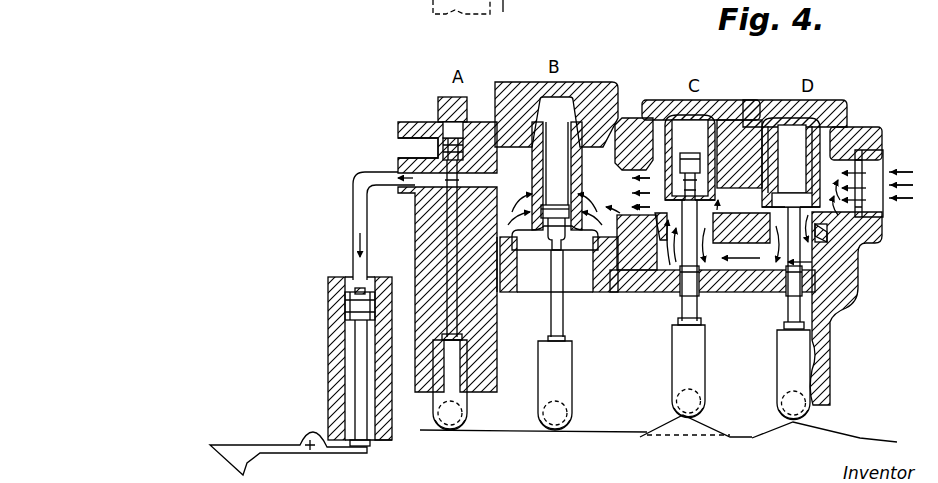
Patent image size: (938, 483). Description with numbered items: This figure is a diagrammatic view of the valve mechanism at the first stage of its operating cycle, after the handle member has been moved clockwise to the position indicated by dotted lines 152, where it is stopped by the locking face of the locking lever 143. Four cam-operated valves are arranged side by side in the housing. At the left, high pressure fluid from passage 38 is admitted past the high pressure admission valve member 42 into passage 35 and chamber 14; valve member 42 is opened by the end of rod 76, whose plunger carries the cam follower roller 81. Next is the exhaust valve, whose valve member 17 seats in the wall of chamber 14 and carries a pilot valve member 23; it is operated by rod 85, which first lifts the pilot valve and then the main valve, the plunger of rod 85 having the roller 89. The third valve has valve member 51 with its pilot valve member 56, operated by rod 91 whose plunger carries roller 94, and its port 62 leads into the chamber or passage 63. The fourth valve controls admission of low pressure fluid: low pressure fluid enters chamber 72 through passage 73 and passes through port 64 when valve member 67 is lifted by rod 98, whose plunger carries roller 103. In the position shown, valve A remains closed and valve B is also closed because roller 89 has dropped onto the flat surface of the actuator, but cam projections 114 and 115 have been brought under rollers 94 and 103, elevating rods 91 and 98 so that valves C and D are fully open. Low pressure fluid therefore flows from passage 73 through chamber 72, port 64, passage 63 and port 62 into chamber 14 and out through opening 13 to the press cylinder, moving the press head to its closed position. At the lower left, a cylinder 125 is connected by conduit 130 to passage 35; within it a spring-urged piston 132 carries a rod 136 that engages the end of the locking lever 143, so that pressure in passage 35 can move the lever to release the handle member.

The opening 13 is at (531, 192).
The chamber 14 is at (601, 160).
The valve member 17 is at (585, 246).
The pilot valve member 23 is at (555, 207).
The passage 35 is at (412, 172).
The passage 38 is at (412, 140).
The high pressure admission valve member 42 is at (440, 136).
The valve member 51 is at (714, 189).
The pilot valve member 56 is at (686, 160).
The port 62 is at (646, 241).
The chamber or passage 63 is at (712, 264).
The port 64 is at (820, 236).
The valve member 67 is at (792, 203).
The chamber 72 is at (848, 125).
The passage 73 is at (872, 167).
The rod 76 is at (456, 305).
The roller 81 is at (453, 432).
The rod 85 is at (560, 320).
The roller 89 is at (555, 432).
The rod 91 is at (688, 297).
The roller 94 is at (655, 428).
The rod 98 is at (802, 308).
The roller 103 is at (808, 421).
The cam projection 114 is at (690, 424).
The cam projection 115 is at (795, 428).
The cylinder 125 is at (330, 352).
The conduit 130 is at (357, 212).
The piston 132 is at (350, 318).
The rod 136 is at (357, 388).
The locking lever 143 is at (262, 450).
The dotted lines 152 is at (513, 5).